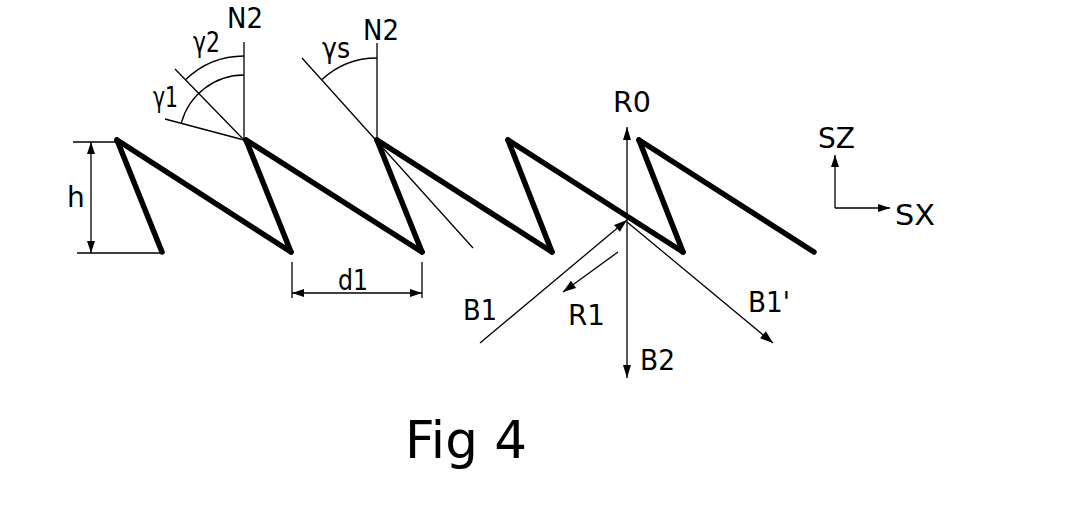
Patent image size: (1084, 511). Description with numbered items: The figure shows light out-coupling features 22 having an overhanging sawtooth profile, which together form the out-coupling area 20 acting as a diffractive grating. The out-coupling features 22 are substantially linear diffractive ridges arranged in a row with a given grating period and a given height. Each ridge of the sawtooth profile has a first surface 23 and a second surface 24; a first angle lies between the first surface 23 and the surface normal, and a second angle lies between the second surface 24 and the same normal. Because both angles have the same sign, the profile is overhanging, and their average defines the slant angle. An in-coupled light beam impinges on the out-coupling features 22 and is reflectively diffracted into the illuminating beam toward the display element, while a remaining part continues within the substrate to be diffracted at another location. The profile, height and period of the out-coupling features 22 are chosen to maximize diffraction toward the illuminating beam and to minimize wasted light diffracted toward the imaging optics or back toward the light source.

The out-coupling area 20 is at (722, 46).
The out-coupling features 22 is at (256, 141).
The first surface 23 is at (322, 189).
The second surface 24 is at (271, 211).